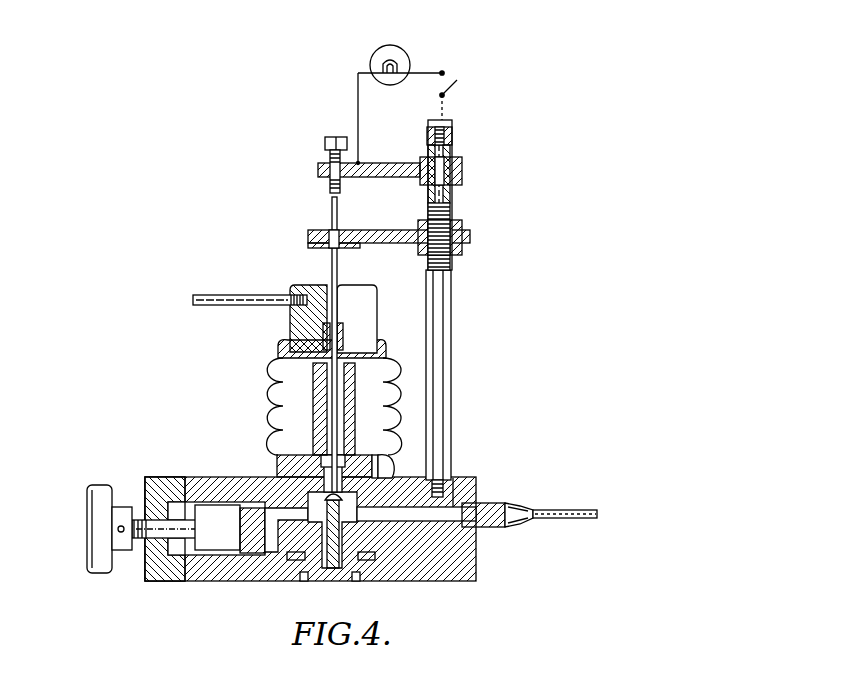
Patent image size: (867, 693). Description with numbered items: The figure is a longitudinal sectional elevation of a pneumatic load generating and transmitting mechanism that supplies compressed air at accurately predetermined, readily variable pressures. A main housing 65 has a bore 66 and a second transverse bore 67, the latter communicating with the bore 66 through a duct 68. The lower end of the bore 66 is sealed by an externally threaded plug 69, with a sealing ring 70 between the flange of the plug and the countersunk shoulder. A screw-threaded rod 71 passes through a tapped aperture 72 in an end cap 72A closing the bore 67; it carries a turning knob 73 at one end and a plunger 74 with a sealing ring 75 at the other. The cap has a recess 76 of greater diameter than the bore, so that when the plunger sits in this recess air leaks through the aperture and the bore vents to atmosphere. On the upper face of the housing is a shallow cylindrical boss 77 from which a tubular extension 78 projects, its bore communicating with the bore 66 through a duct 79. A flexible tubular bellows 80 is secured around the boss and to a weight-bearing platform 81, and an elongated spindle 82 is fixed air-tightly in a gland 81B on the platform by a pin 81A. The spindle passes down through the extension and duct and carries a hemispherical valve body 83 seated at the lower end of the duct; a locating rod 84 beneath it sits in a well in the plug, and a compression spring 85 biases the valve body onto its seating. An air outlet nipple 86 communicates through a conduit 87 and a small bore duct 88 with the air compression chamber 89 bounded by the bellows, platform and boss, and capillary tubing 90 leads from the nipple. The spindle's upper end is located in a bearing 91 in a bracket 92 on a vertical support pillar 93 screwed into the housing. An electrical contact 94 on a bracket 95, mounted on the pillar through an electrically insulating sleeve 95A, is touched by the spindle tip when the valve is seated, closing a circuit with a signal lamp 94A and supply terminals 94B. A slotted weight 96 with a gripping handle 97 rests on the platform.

The main housing 65 is at (477, 562).
The bore 66 is at (374, 477).
The second transverse bore 67 is at (212, 545).
The duct 68 is at (271, 508).
The externally threaded plug 69 is at (343, 568).
The sealing ring 70 is at (300, 566).
The screw-threaded rod 71 is at (188, 536).
The tapped aperture 72 is at (150, 500).
The end cap 72A is at (148, 580).
The turning knob 73 is at (98, 485).
The plunger 74 is at (236, 542).
The sealing ring 75 is at (248, 508).
The recess 76 is at (176, 502).
The boss 77 is at (352, 457).
The tubular extension 78 is at (313, 411).
The duct 79 is at (325, 466).
The flexible tubular bellows 80 is at (271, 388).
The weight-bearing platform 81 is at (372, 346).
The pin 81A is at (342, 330).
The gland 81B is at (323, 342).
The elongated spindle 82 is at (340, 262).
The hemispherical valve body 83 is at (378, 560).
The locating rod 84 is at (320, 576).
The compression spring 85 is at (400, 568).
The air outlet nipple 86 is at (477, 503).
The conduit 87 is at (456, 480).
The small bore duct 88 is at (385, 465).
The air compression chamber 89 is at (357, 398).
The capillary tubing 90 is at (565, 510).
The bearing 91 is at (308, 236).
The bracket 92 is at (462, 236).
The vertical support pillar 93 is at (452, 292).
The electrical contact 94 is at (330, 184).
The signal lamp 94A is at (372, 56).
The supply terminals 94B is at (456, 82).
The bracket 95 is at (370, 163).
The electrically insulating sleeve 95A is at (462, 160).
The slotted weight 96 is at (294, 286).
The gripping handle 97 is at (218, 295).